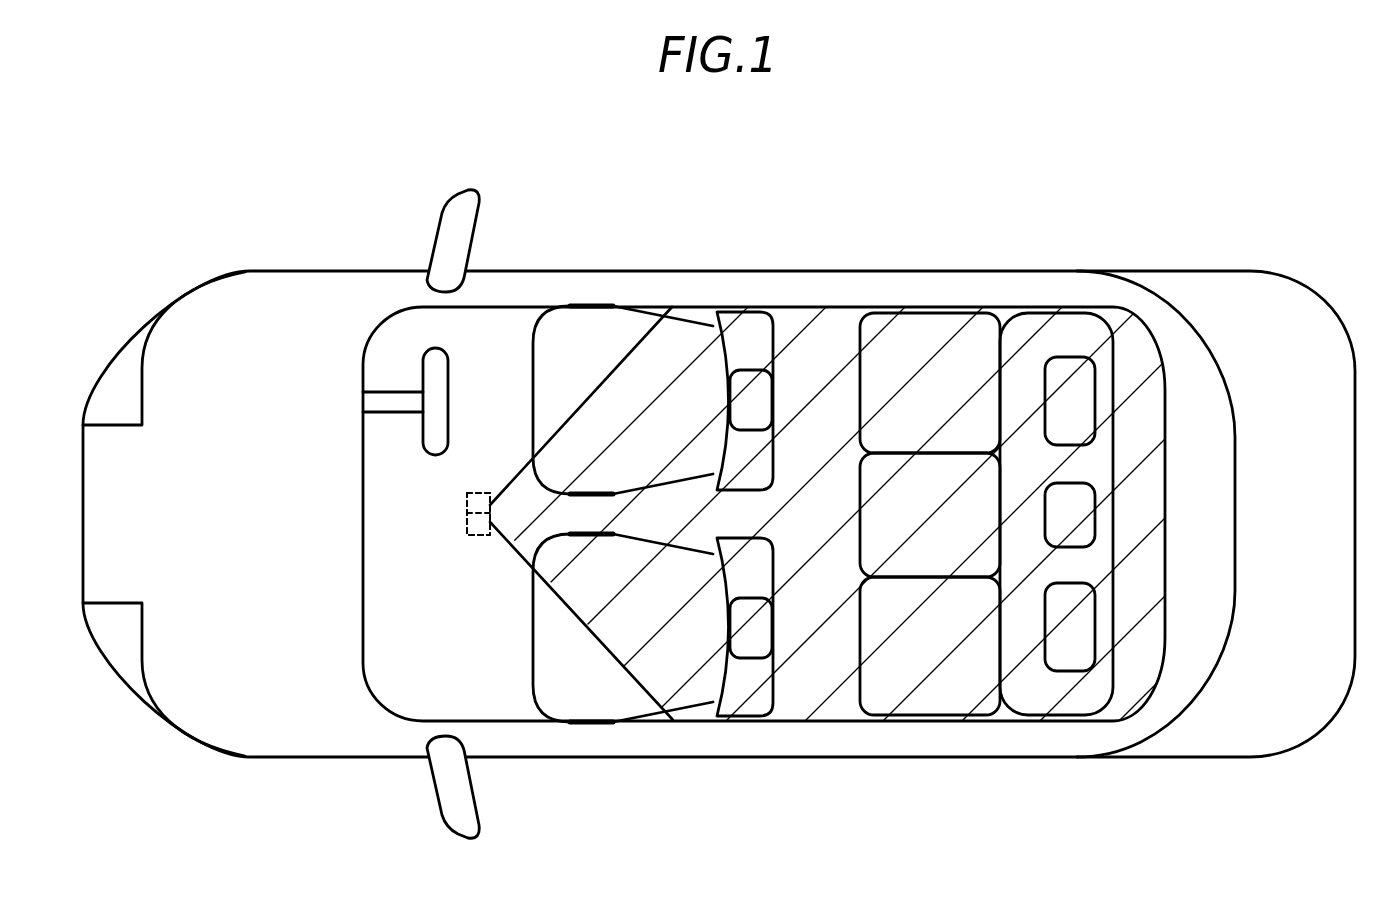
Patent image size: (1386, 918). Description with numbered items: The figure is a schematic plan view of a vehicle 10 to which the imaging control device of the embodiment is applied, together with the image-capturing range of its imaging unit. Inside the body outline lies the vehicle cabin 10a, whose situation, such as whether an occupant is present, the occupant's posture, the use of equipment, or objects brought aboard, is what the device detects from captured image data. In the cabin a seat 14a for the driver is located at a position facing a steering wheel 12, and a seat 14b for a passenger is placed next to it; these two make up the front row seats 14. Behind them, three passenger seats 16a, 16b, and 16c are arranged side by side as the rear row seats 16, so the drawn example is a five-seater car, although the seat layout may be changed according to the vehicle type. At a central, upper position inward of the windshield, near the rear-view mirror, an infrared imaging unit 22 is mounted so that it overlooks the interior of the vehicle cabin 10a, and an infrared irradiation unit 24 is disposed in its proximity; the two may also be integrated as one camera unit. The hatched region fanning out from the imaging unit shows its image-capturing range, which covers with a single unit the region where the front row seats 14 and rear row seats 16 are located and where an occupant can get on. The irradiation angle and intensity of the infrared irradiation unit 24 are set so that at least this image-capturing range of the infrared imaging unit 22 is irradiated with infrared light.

The vehicle 10 is at (605, 232).
The vehicle cabin 10a is at (503, 333).
The steering wheel 12 is at (431, 358).
The front row seats 14 is at (668, 518).
The seat for a driver 14a is at (747, 322).
The seat for a passenger 14b is at (743, 713).
The rear row seats 16 is at (978, 489).
The passenger seat 16a is at (892, 360).
The passenger seat 16b is at (945, 642).
The passenger seat 16c is at (970, 510).
The infrared imaging unit 22 is at (467, 510).
The infrared irradiation unit 24 is at (467, 517).